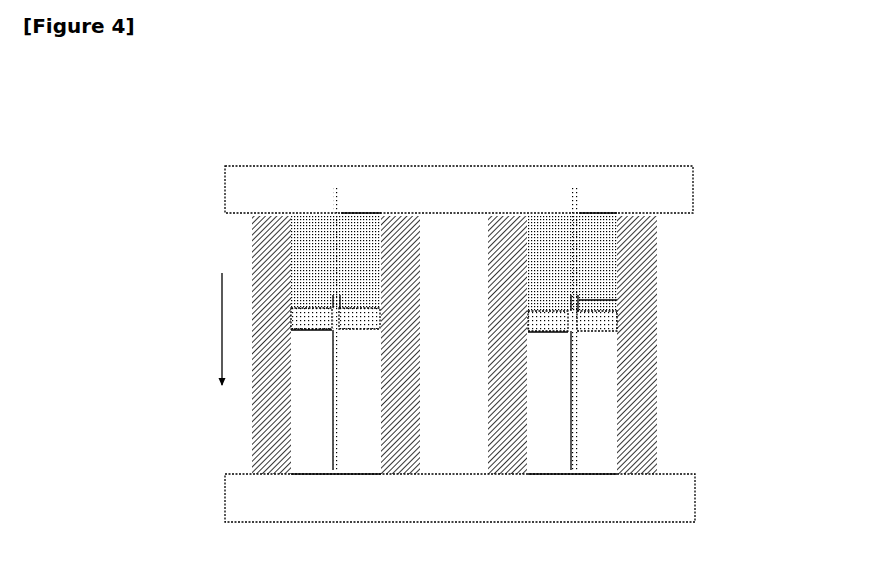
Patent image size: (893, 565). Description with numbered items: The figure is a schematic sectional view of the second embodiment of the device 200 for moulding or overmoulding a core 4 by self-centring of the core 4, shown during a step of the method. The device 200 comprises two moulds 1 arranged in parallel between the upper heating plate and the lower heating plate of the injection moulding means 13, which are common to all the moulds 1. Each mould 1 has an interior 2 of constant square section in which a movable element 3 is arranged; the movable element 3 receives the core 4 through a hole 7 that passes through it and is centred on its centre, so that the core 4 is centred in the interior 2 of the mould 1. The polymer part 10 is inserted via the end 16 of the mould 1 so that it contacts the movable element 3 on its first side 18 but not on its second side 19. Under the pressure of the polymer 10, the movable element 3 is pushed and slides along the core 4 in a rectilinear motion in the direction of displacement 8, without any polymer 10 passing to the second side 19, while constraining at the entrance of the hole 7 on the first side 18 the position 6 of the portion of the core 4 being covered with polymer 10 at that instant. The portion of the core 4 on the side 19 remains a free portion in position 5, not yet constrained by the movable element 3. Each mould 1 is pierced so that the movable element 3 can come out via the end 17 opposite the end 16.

The device 200 is at (409, 317).
The mould 1 is at (421, 232).
The interior 2 is at (291, 422).
The movable element 3 is at (362, 322).
The core 4 is at (328, 196).
The position 5 is at (325, 448).
The position 6 is at (339, 298).
The hole 7 is at (330, 303).
The direction of displacement 8 is at (216, 340).
The polymer part 10 is at (322, 240).
The injection moulding means 13 is at (222, 180).
The end 16 is at (358, 213).
The end 17 is at (307, 457).
The first side 18 is at (602, 303).
The second side 19 is at (325, 335).